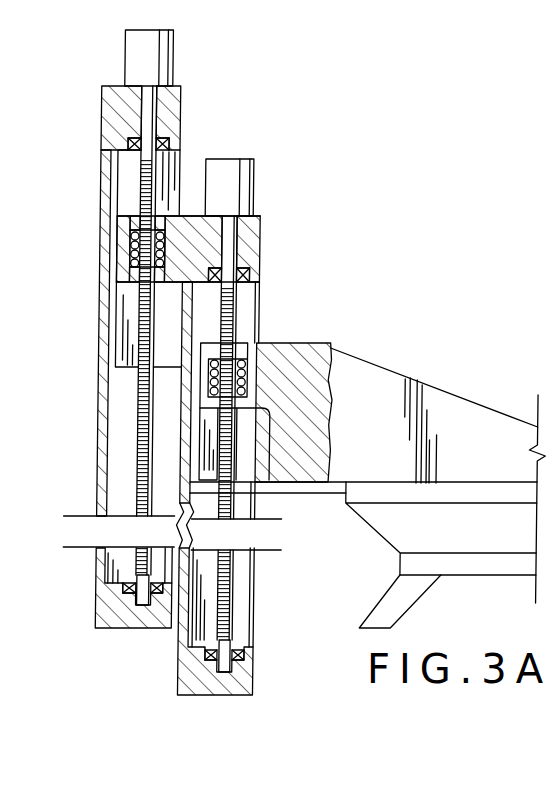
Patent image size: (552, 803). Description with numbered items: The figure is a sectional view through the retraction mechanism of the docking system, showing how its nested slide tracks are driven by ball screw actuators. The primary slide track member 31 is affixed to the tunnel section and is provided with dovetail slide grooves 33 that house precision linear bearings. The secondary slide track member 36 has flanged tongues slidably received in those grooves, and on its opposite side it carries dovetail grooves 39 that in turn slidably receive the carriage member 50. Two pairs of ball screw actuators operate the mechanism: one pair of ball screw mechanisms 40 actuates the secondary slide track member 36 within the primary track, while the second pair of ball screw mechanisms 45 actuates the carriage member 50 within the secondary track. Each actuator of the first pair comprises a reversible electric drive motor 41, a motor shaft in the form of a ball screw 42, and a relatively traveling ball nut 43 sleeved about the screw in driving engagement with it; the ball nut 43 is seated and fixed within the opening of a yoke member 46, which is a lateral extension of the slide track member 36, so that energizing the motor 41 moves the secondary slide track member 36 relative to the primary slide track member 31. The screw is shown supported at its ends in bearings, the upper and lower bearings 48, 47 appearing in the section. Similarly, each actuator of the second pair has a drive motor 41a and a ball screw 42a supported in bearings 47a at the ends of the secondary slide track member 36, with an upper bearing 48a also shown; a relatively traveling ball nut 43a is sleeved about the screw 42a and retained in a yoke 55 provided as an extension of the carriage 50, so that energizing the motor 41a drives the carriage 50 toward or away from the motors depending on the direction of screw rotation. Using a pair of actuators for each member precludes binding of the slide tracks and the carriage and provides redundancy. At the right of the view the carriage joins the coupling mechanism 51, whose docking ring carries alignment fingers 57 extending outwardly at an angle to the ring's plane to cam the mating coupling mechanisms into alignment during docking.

The primary slide track member 31 is at (98, 118).
The dovetail slide grooves 33 is at (120, 200).
The secondary slide track member 36 is at (245, 570).
The dovetail grooves 39 is at (257, 494).
The ball screw mechanisms 40 is at (121, 50).
The reversible electric drive motor 41 is at (170, 47).
The drive motor 41a is at (252, 173).
The ball screw 42 is at (138, 180).
The ball screw 42a is at (235, 300).
The ball nut 43 is at (128, 245).
The ball nut 43a is at (258, 372).
The ball screw mechanisms 45 is at (258, 237).
The yoke member 46 is at (121, 268).
The lower bearing 47 is at (125, 586).
The bearings 47a is at (244, 657).
The upper bearing 48 is at (168, 143).
The second upper bearing 48a is at (258, 274).
The carriage member 50 is at (471, 395).
The coupling mechanism 51 is at (370, 525).
The yoke 55 is at (234, 444).
The alignment fingers 57 is at (386, 607).